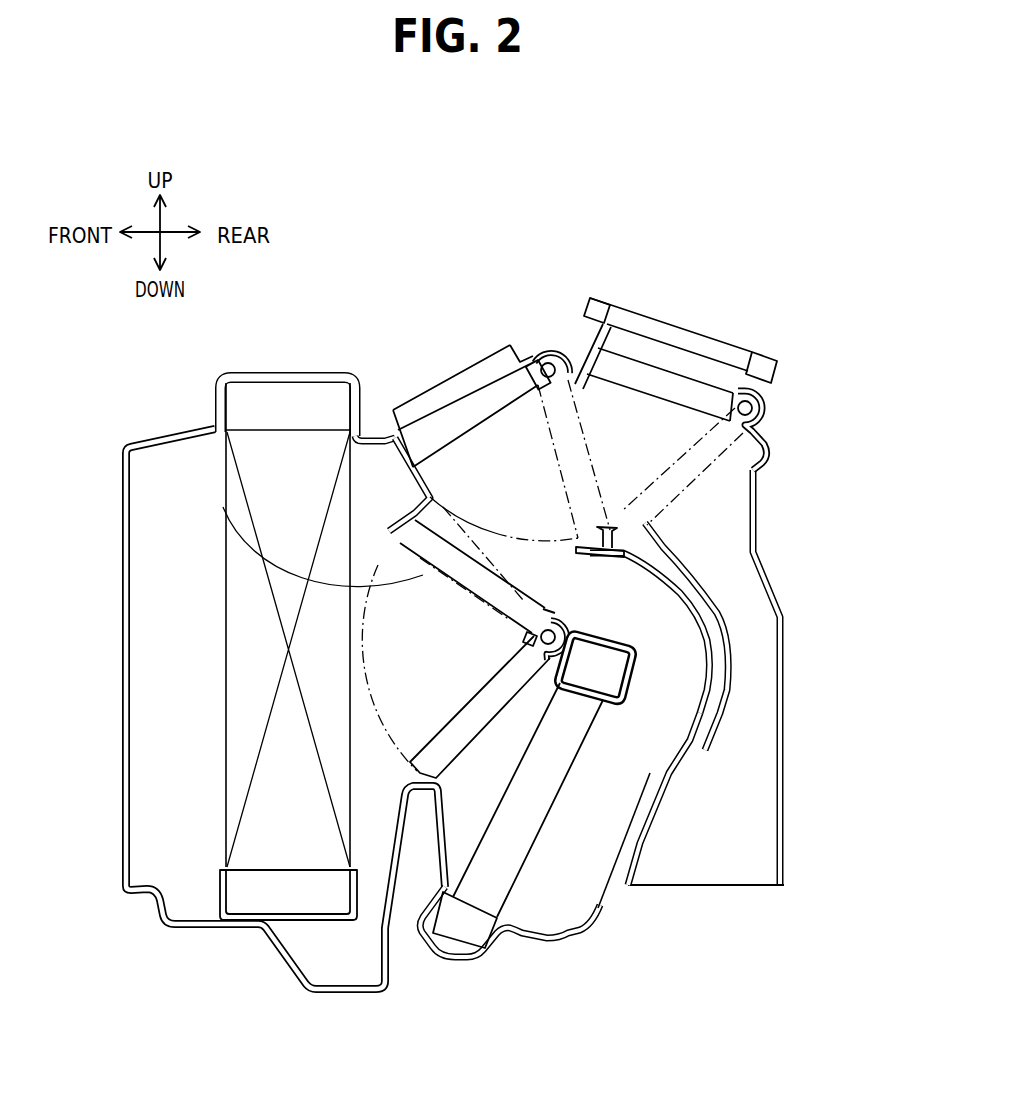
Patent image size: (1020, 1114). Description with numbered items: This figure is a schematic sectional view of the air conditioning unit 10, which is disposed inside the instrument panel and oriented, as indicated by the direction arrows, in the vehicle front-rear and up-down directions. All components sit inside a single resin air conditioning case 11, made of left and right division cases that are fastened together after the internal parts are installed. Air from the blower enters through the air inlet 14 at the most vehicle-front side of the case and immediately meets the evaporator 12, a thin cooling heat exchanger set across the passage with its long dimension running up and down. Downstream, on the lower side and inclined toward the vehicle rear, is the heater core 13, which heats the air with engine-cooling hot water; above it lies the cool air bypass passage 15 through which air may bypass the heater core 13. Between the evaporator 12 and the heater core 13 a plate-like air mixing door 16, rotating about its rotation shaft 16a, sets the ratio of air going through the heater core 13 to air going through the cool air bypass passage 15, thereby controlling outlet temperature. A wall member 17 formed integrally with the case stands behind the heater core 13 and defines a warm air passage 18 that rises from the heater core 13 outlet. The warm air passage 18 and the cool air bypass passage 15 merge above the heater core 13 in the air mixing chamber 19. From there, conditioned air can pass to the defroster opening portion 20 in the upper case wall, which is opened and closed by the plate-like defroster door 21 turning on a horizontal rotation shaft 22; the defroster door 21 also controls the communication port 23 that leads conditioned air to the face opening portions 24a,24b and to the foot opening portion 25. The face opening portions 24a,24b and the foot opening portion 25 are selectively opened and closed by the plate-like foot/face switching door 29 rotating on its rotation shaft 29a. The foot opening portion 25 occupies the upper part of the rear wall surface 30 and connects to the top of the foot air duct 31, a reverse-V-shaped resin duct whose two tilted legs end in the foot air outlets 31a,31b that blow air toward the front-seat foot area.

The air conditioning unit 10 is at (396, 357).
The air conditioning case 11 is at (262, 369).
The evaporator 12 is at (277, 820).
The heater core 13 is at (458, 750).
The air inlet 14 is at (168, 543).
The cool air bypass passage 15 is at (223, 507).
The air mixing door 16 is at (533, 645).
The rotation shaft 16a is at (531, 658).
The wall member 17 is at (650, 800).
The warm air passage 18 is at (607, 762).
The air mixing chamber 19 is at (497, 537).
The defroster opening portion 20 is at (498, 368).
The defroster door 21 is at (468, 417).
The rotation shaft 22 is at (548, 361).
The communication port 23 is at (623, 380).
The face opening portions 24a,24b is at (703, 367).
The foot opening portion 25 is at (700, 493).
The foot/face switching door 29 is at (660, 380).
The rotation shaft 29a is at (760, 409).
The rear wall surface 30 is at (710, 617).
The foot air duct 31 is at (784, 671).
The foot air outlets 31a,31b is at (707, 887).